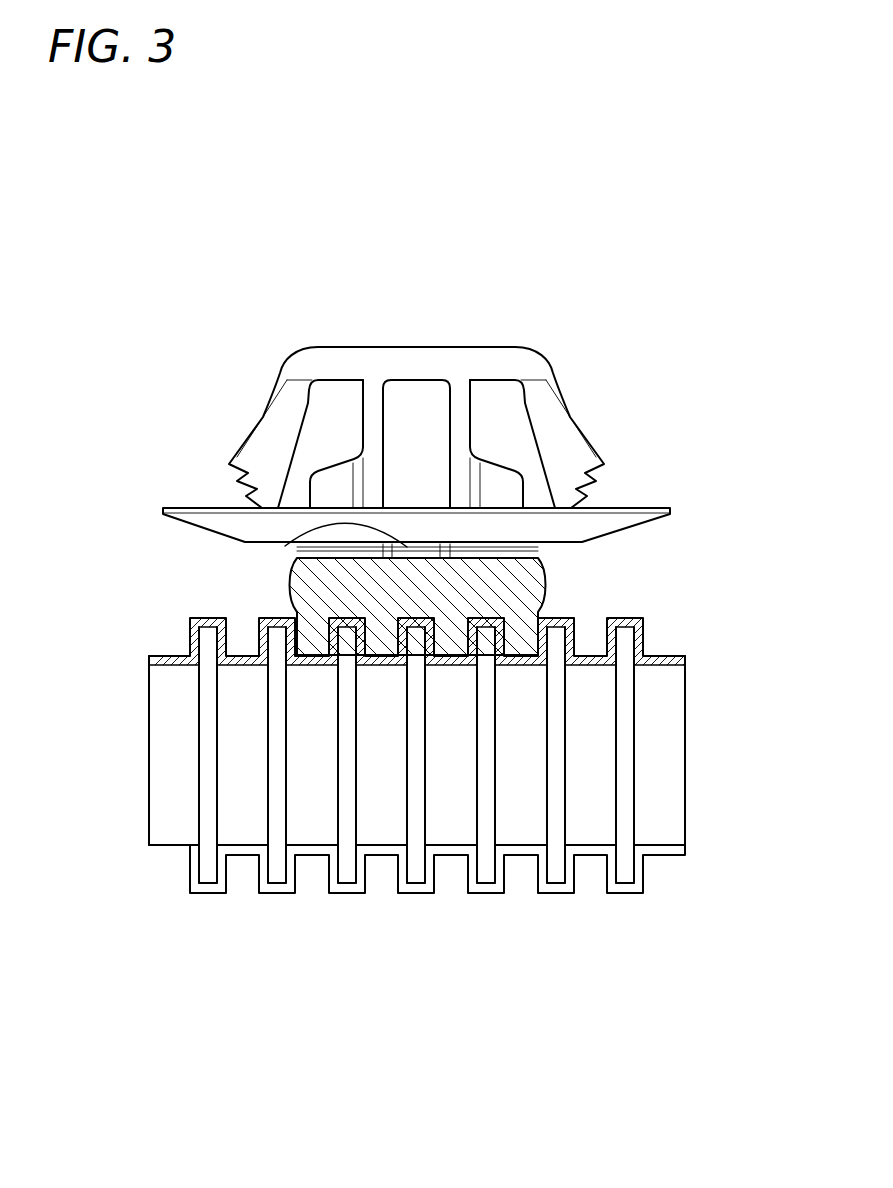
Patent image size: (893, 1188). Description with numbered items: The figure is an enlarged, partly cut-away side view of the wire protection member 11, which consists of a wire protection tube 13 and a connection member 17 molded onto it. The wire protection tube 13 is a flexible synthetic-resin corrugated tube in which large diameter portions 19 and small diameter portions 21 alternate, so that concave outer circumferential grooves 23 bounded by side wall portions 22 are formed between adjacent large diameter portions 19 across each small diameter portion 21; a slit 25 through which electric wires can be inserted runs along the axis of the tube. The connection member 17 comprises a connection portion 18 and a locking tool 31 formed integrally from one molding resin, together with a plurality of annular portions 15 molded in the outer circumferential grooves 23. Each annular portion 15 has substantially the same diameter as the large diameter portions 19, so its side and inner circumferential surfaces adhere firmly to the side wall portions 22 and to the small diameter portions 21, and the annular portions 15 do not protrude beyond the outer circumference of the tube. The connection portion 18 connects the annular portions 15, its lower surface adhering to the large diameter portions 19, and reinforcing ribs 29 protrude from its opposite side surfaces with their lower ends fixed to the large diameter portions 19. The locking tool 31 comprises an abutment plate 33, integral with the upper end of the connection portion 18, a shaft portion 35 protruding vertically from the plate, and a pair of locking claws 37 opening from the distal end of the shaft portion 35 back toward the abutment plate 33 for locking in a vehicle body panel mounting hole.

The wire protection member 11 is at (298, 311).
The wire protection tube 13 is at (403, 779).
The annular portions 15 is at (520, 885).
The connection member 17 is at (421, 361).
The connection portion 18 is at (483, 590).
The large diameter portions 19 is at (640, 895).
The small diameter portions 21 is at (662, 857).
The side wall portions 22 is at (298, 877).
The outer circumferential grooves 23 is at (583, 870).
The slit 25 is at (148, 847).
The reinforcing ribs 29 is at (405, 546).
The locking tool 31 is at (371, 347).
The abutment plate 33 is at (653, 503).
The shaft portion 35 is at (426, 390).
The locking claws 37 is at (238, 448).